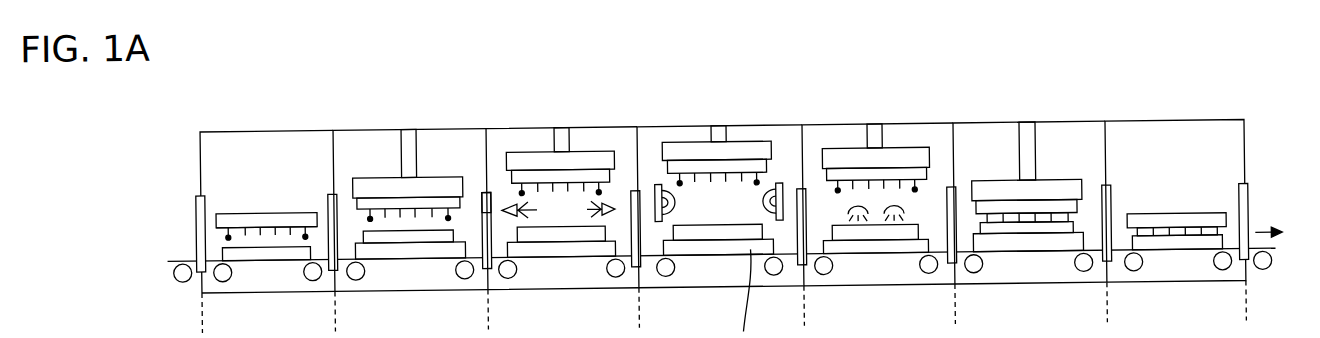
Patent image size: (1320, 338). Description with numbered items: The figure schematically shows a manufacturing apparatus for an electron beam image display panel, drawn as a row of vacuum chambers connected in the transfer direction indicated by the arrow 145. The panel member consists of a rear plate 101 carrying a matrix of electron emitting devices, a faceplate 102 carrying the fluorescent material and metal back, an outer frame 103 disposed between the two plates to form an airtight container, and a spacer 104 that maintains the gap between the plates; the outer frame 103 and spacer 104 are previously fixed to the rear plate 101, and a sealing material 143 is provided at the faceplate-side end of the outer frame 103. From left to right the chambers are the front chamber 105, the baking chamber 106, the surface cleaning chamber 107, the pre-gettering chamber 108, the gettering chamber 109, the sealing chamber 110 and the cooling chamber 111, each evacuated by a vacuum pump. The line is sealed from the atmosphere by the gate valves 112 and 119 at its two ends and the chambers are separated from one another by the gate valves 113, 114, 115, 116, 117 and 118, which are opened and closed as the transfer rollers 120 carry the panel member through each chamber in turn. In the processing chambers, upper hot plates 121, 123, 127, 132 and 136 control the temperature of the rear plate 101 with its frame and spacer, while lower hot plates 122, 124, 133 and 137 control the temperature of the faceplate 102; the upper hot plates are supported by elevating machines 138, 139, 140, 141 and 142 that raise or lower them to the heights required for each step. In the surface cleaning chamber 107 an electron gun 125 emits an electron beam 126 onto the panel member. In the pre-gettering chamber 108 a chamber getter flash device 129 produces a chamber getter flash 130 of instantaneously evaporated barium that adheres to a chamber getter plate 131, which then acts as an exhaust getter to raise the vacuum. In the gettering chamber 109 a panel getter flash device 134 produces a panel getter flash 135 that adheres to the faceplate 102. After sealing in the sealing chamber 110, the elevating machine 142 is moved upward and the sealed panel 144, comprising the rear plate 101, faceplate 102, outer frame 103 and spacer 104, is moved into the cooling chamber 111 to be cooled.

The rear plate 101 is at (278, 214).
The faceplate 102 is at (256, 262).
The outer frame 103 is at (228, 232).
The spacer 104 is at (257, 226).
The front chamber 105 is at (212, 132).
The baking chamber 106 is at (370, 132).
The surface cleaning chamber 107 is at (545, 132).
The pre-gettering chamber 108 is at (700, 132).
The gettering chamber 109 is at (862, 132).
The sealing chamber 110 is at (1003, 132).
The cooling chamber 111 is at (1140, 132).
The gate valve 112 is at (197, 201).
The gate valve 113 is at (327, 273).
The gate valve 114 is at (483, 273).
The gate valve 115 is at (632, 273).
The gate valve 116 is at (797, 273).
The gate valve 117 is at (947, 273).
The gate valve 118 is at (1100, 273).
The gate valve 119 is at (1240, 273).
The transfer roller 120 is at (182, 283).
The hot plate 121 is at (375, 182).
The hot plate 122 is at (405, 259).
The hot plate 123 is at (530, 160).
The hot plate 124 is at (578, 252).
The electron gun 125 is at (486, 200).
The electron beam 126 is at (531, 216).
The hot plate 127 is at (685, 152).
The chamber getter flash device 129 is at (683, 214).
The chamber getter flash 130 is at (667, 212).
The chamber getter plate 131 is at (701, 204).
The hot plate 132 is at (853, 162).
The hot plate 133 is at (895, 252).
The panel getter flash device 134 is at (843, 202).
The panel getter flash 135 is at (858, 227).
The hot plate 136 is at (985, 163).
The hot plate 137 is at (1020, 252).
The elevating machine 138 is at (415, 152).
The elevating machine 139 is at (568, 144).
The elevating machine 140 is at (726, 142).
The elevating machine 141 is at (882, 145).
The elevating machine 142 is at (1036, 155).
The sealing material 143 is at (228, 238).
The sealed panel 144 is at (1180, 227).
The arrow 145 is at (1262, 240).